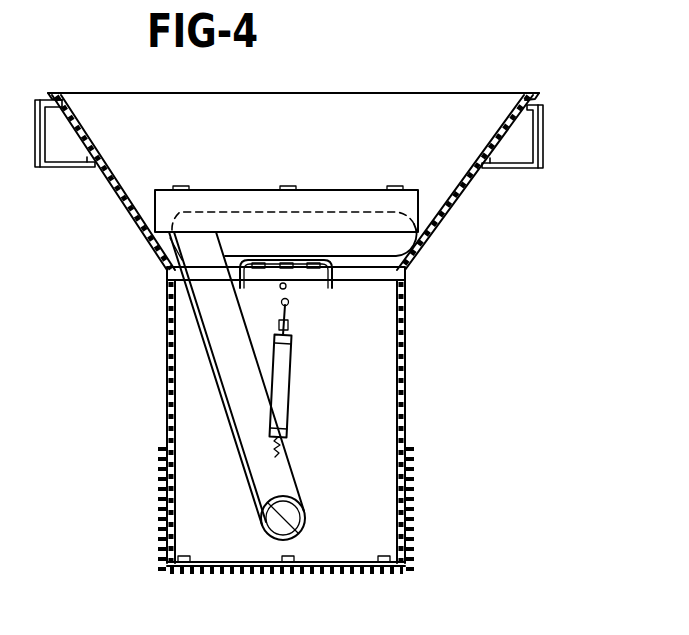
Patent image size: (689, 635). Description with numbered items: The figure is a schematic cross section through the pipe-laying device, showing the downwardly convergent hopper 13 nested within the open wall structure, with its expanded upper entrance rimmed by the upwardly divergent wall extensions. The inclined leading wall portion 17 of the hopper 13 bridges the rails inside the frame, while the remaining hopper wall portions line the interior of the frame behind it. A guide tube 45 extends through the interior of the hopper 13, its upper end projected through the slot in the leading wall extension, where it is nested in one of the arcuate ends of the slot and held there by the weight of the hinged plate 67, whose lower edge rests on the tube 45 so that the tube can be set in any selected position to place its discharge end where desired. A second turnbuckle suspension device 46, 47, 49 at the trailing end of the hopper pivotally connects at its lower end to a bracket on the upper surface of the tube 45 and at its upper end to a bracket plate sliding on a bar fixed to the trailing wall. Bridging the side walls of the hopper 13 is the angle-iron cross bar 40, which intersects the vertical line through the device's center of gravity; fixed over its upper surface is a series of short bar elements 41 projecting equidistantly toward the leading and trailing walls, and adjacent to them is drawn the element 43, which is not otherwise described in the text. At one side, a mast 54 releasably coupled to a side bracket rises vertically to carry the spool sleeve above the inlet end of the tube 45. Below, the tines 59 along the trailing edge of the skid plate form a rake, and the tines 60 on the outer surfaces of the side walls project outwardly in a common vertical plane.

The hopper 13 is at (458, 183).
The inclined leading wall portion 17 is at (366, 464).
The cross bar 40 is at (385, 277).
The bar elements 41 is at (275, 262).
The bracket handle 43 is at (313, 258).
The guide tube 45 is at (182, 238).
The turnbuckle suspension device 46 is at (273, 452).
The turnbuckle suspension device 47 is at (289, 323).
The turnbuckle suspension device 49 is at (290, 397).
The mast 54 is at (542, 160).
The tines 59 is at (318, 574).
The tines 60 is at (160, 462).
The plate 67 is at (330, 197).